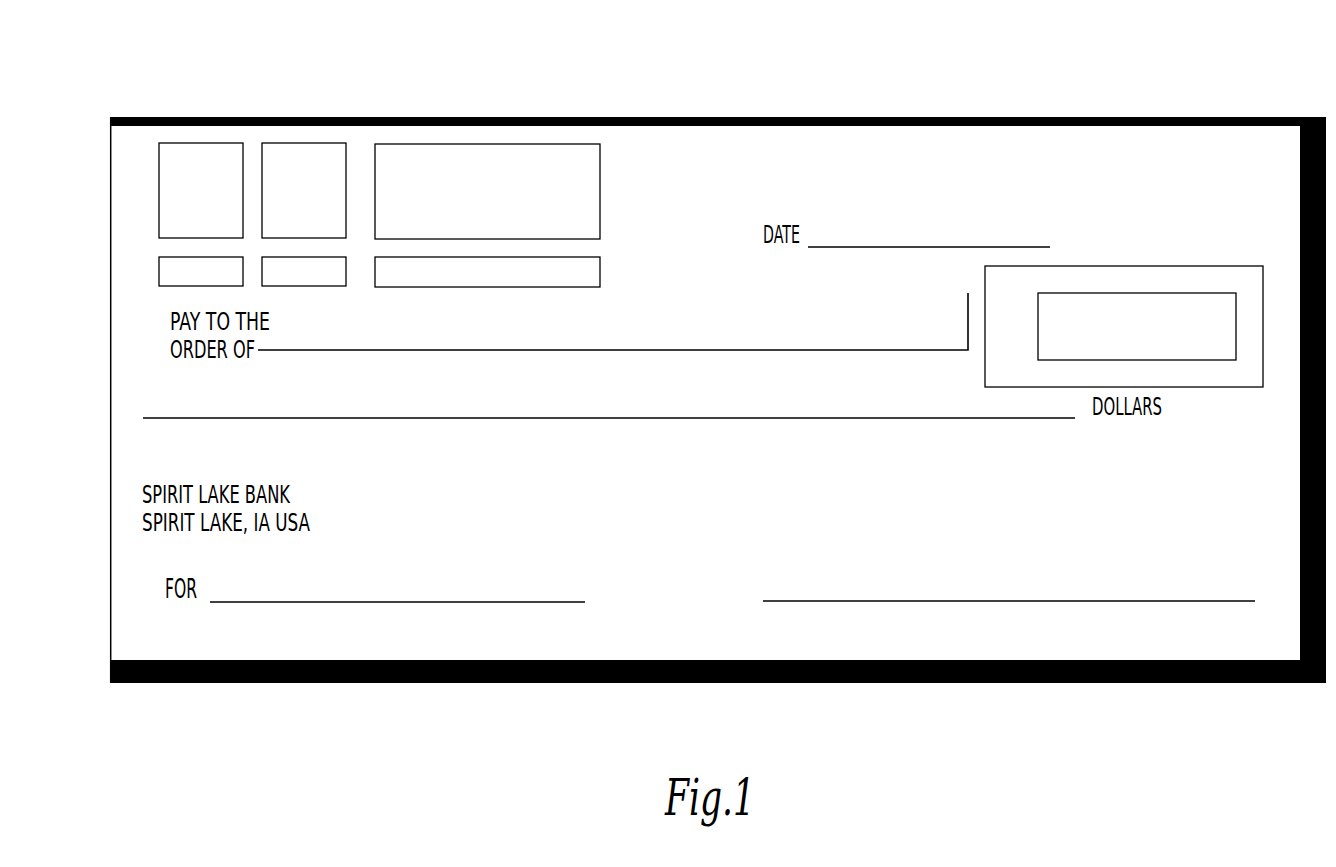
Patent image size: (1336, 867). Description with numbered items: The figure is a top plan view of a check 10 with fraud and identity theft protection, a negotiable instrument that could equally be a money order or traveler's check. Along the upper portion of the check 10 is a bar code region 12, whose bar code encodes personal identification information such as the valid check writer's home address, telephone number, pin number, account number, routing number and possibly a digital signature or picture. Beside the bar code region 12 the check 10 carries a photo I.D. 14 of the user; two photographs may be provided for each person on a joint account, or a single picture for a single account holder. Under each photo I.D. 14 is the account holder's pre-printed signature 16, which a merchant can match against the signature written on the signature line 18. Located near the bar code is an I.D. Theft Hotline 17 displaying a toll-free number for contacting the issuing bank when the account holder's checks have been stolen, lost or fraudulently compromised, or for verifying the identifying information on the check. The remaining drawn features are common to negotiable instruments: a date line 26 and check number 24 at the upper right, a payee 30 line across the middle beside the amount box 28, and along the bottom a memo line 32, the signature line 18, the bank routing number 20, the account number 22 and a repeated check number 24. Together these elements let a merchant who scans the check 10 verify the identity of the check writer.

The check 10 is at (853, 48).
The bar code region 12 is at (568, 184).
The photo I.D. 14 is at (184, 143).
The pre-printed signature 16 is at (159, 268).
The I.D. Theft Hotline 17 is at (603, 268).
The signature line 18 is at (1010, 601).
The bank routing number 20 is at (205, 627).
The account number 22 is at (466, 625).
The check number 24 is at (1222, 158).
The date line 26 is at (928, 247).
The amount box 28 is at (1136, 300).
The payee 30 is at (500, 350).
The memo line 32 is at (397, 602).